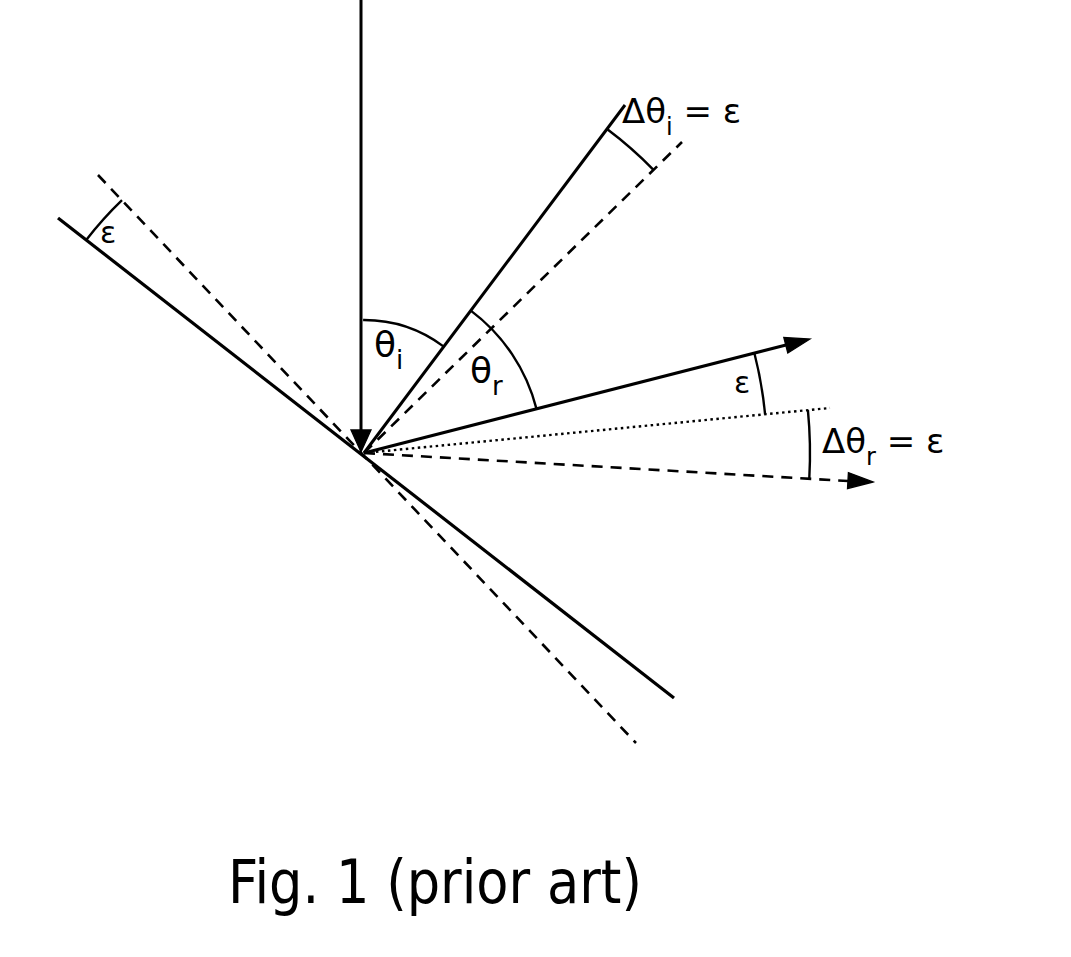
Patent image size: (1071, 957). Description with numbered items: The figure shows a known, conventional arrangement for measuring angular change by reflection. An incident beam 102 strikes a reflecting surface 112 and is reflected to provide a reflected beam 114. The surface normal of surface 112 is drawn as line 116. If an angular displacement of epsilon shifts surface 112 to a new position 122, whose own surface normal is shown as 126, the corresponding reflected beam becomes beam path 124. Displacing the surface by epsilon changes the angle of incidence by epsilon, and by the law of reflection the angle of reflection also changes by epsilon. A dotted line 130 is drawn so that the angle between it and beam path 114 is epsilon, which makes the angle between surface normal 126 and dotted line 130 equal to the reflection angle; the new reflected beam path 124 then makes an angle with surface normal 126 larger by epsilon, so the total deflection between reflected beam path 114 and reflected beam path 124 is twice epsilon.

The incident beam 102 is at (358, 52).
The surface 112 is at (165, 305).
The new position of surface 122 is at (173, 253).
The surface normal of surface 112 116 is at (557, 190).
The surface normal of surface 122 126 is at (553, 272).
The reflected beam 114 is at (713, 357).
The dotted line 130 is at (787, 414).
The reflected beam path 124 is at (757, 475).